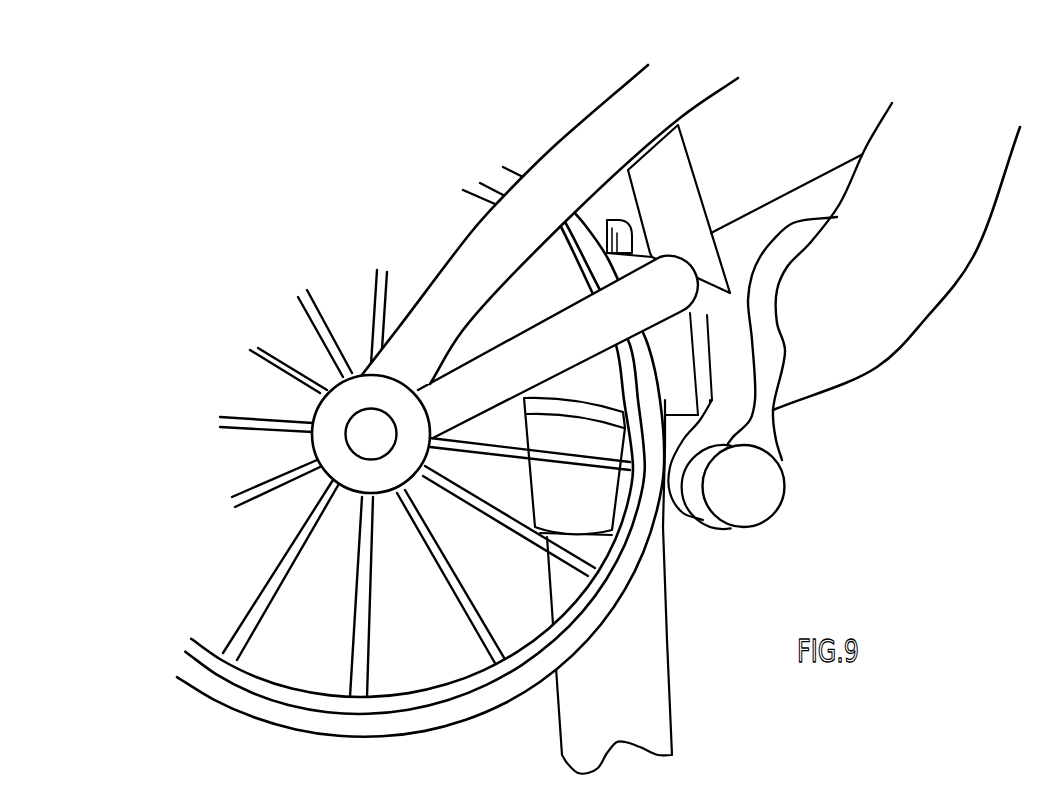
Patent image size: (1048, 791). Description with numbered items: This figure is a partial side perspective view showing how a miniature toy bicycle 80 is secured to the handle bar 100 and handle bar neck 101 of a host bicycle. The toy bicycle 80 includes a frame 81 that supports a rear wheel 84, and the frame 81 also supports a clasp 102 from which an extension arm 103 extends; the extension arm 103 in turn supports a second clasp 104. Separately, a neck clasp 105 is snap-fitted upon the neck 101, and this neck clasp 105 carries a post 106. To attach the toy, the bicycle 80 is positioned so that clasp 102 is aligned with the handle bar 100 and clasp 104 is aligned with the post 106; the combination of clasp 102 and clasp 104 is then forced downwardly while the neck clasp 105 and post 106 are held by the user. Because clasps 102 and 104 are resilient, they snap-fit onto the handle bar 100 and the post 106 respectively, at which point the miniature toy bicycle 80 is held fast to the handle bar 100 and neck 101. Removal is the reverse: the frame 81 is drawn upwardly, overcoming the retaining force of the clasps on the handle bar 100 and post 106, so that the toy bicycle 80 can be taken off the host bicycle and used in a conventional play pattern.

The miniature toy bicycle 80 is at (631, 57).
The frame 81 is at (580, 143).
The rear wheel 84 is at (400, 727).
The handle bar 100 is at (903, 297).
The handle bar neck 101 is at (645, 658).
The clasp 102 is at (777, 272).
The extension arm 103 is at (773, 433).
The clasp 104 is at (692, 503).
The neck clasp 105 is at (560, 497).
The post 106 is at (757, 507).